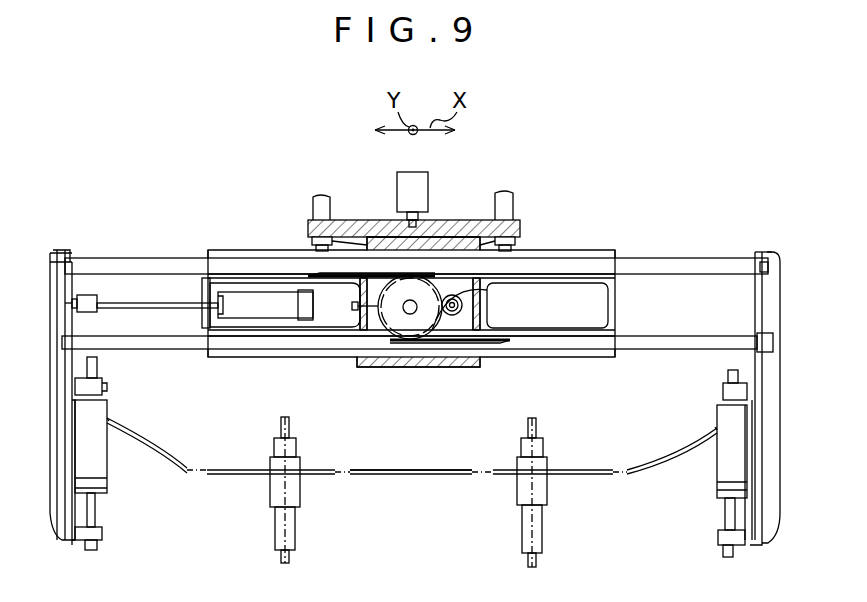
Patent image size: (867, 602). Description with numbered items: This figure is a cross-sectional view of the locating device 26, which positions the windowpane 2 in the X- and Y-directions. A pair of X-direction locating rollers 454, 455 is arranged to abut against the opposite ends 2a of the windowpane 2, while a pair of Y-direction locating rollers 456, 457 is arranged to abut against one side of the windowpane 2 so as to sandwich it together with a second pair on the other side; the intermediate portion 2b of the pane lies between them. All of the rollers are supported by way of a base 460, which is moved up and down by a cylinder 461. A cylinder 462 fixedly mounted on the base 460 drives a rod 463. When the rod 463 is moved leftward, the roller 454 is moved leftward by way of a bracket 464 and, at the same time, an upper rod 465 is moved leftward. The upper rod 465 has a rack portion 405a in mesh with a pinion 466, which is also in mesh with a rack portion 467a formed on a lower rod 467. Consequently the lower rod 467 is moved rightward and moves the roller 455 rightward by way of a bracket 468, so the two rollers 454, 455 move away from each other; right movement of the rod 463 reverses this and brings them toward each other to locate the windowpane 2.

The windowpane 2 is at (427, 478).
The opposite ends of the windowpane 2a is at (108, 417).
The belt intermediate portion 2b is at (377, 478).
The locating device 26 is at (727, 241).
The rack portion 405a is at (385, 275).
The X-direction locating roller 454 is at (107, 470).
The X-direction locating roller 455 is at (717, 468).
The Y-direction locating roller 456 is at (270, 483).
The Y-direction locating roller 457 is at (565, 487).
The base 460 is at (350, 213).
The cylinder 461 is at (398, 182).
The cylinder 462 is at (253, 290).
The rod 463 is at (118, 302).
The bracket 464 is at (48, 500).
The upper rod 465 is at (177, 263).
The pinion 466 is at (487, 290).
The lower rod 467 is at (178, 350).
The rack portion 467a is at (460, 345).
The bracket 468 is at (778, 513).